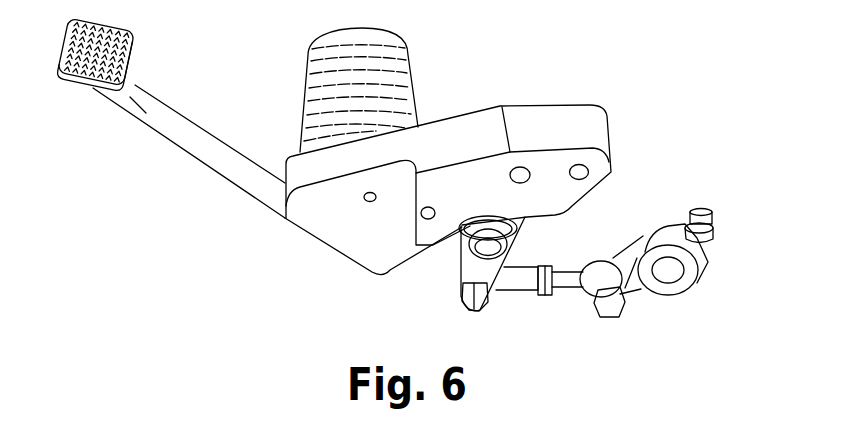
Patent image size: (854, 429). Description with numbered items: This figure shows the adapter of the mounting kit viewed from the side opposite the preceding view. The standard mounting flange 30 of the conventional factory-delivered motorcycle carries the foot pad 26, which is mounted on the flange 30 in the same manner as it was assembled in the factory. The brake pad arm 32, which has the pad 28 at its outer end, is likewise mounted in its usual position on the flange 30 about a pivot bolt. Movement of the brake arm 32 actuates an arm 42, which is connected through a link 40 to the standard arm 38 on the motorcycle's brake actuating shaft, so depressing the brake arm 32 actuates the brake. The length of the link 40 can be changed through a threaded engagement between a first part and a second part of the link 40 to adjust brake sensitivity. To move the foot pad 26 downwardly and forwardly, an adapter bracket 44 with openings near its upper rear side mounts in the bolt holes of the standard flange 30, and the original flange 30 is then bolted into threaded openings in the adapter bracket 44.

The foot pad 26 is at (402, 50).
The pad 28 is at (112, 44).
The standard mounting flange 30 is at (289, 171).
The brake pad arm 32 is at (196, 136).
The standard arm 38 is at (625, 266).
The link 40 is at (521, 285).
The arm 42 is at (470, 272).
The adapter bracket 44 is at (550, 120).